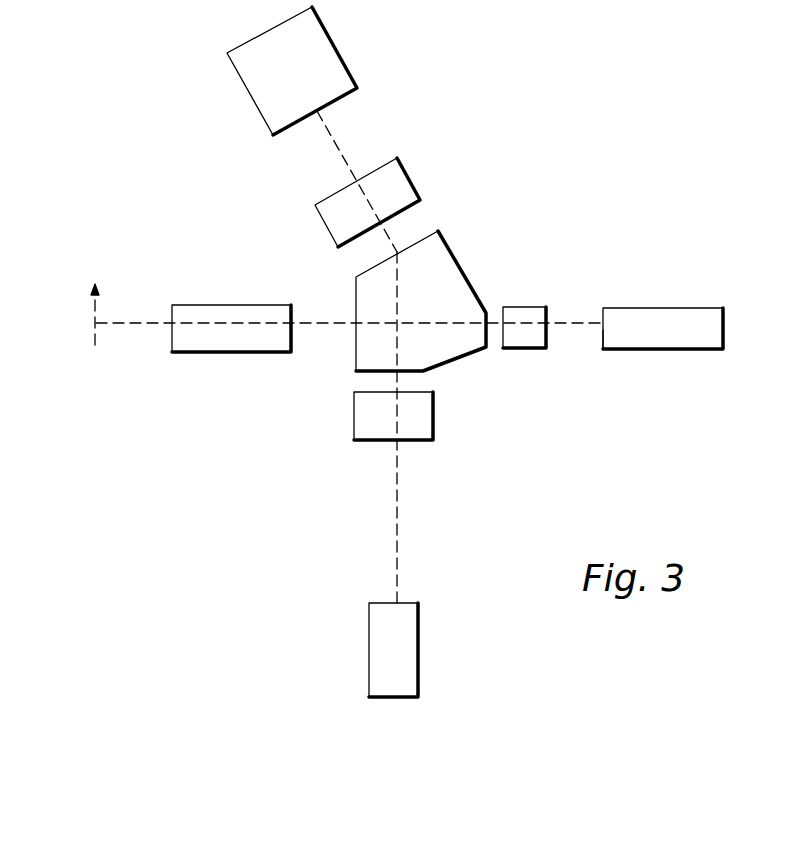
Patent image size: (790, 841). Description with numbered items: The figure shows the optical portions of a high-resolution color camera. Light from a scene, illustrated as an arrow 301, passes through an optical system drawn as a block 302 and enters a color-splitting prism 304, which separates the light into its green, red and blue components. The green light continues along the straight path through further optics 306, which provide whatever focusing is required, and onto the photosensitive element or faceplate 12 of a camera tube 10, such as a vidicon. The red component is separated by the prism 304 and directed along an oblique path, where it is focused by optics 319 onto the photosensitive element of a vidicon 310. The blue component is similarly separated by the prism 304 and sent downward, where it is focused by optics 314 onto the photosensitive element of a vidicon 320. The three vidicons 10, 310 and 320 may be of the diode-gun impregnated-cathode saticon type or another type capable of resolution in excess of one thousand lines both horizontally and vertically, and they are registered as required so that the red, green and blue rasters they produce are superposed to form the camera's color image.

The camera tube 10 is at (662, 308).
The photosensitive element 12 is at (603, 342).
The light from a scene 301 is at (93, 310).
The optical system 302 is at (203, 305).
The color-splitting prism 304 is at (355, 364).
The further optics 306 is at (527, 307).
The vidicon 310 is at (335, 43).
The optics 314 is at (433, 428).
The optics 319 is at (407, 166).
The vidicon 320 is at (418, 628).